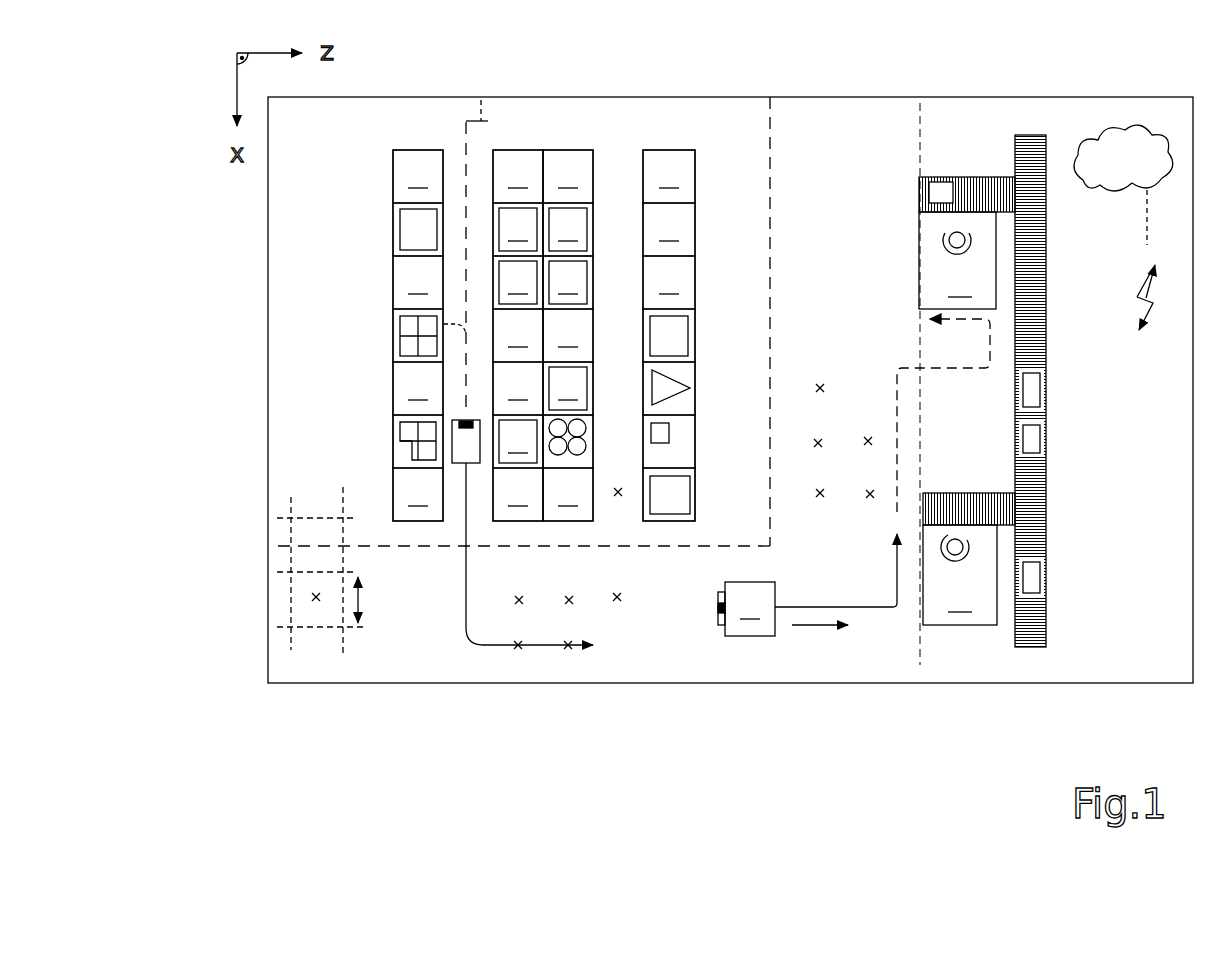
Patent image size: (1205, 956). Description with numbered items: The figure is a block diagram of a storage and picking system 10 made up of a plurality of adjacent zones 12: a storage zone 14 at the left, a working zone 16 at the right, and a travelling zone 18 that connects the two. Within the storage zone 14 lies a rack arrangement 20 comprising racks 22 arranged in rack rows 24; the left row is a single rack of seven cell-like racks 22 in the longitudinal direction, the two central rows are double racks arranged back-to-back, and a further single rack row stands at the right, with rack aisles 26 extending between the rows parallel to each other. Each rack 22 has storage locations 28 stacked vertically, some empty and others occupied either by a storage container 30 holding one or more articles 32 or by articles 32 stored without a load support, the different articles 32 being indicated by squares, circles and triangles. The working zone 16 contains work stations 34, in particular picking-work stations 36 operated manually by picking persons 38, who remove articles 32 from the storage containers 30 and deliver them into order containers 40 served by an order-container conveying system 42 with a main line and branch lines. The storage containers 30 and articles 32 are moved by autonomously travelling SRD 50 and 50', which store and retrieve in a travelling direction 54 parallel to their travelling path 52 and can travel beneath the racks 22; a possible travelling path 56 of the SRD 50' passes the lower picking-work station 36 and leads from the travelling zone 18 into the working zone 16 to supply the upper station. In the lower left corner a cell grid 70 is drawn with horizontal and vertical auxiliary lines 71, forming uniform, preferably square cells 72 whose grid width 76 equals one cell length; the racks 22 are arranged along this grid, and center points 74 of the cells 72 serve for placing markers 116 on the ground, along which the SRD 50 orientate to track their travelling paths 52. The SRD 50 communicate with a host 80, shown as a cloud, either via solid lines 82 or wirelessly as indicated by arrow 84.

The storage and picking system 10 is at (397, 692).
The zones 12 is at (957, 727).
The storage zone 14 is at (281, 147).
The working zone 16 is at (932, 130).
The travelling zone 18 is at (792, 147).
The rack arrangement 20 is at (458, 106).
The racks 22 is at (393, 159).
The rack rows 24 is at (422, 534).
The rack aisles 26 is at (457, 246).
The storage locations 28 is at (544, 335).
The storage container 30 is at (397, 228).
The articles 32 is at (393, 329).
The work stations 34 is at (913, 265).
The picking-work stations 36 is at (958, 418).
The picking persons 38 is at (950, 252).
The order containers 40 is at (1045, 383).
The order-container conveying system 42 is at (1050, 262).
The SRD 50 is at (467, 404).
The SRD 50' is at (705, 628).
The travelling path 52 is at (497, 652).
The travelling direction 54 is at (481, 100).
The travelling path 56 is at (960, 370).
The cell grid 70 is at (303, 480).
The auxiliary lines 71 is at (292, 617).
The cells 72 is at (327, 531).
The center points 74 is at (316, 610).
The grid width 76 is at (360, 596).
The host 80 is at (1110, 167).
The solid lines 82 is at (1148, 196).
The arrow 84 is at (1152, 308).
The markers 116 is at (614, 600).